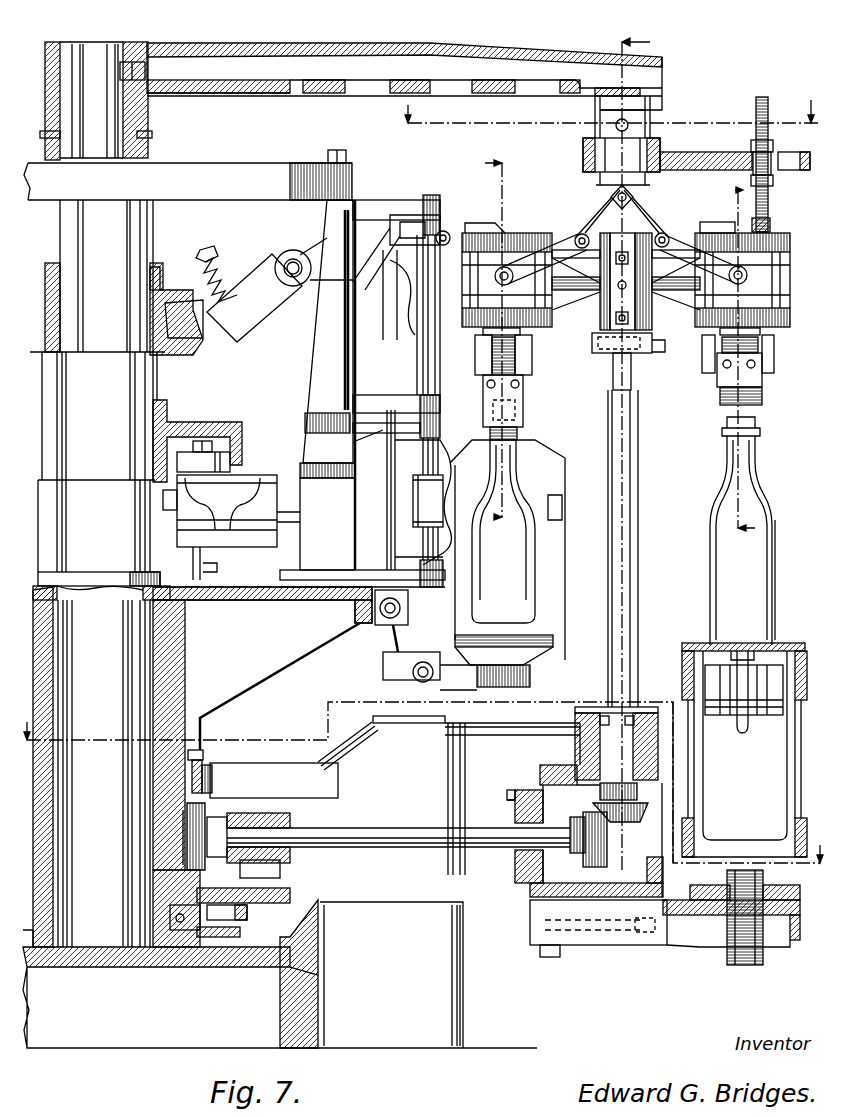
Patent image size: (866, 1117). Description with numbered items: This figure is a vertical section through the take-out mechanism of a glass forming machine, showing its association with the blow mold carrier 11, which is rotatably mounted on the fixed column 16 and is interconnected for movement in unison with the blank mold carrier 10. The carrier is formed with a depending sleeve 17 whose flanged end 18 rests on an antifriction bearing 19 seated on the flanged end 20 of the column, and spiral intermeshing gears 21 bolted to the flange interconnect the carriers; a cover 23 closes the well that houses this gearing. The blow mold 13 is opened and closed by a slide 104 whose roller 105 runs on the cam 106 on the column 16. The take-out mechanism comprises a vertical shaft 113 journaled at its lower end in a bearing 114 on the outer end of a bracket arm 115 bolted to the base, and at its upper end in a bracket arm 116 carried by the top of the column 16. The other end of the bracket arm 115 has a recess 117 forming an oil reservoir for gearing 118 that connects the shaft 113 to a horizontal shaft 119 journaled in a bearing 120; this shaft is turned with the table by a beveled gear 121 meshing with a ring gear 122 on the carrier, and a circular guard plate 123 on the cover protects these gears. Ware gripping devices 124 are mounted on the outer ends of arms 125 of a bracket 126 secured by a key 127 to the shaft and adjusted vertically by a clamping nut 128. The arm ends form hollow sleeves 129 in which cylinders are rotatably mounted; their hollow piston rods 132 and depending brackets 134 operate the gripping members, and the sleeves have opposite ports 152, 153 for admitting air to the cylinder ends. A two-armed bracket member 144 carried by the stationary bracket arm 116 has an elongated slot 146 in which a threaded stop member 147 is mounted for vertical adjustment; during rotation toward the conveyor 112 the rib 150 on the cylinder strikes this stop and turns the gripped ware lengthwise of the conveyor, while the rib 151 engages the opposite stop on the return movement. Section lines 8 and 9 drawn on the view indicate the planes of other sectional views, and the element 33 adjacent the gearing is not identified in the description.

The section line 8- 8 is at (421, 782).
The section line 9- 9 is at (603, 107).
The vertical spindle shaft 10 is at (622, 460).
The section line 11-11 / frame beam 11 is at (258, 625).
The bottle holder 13 is at (550, 575).
The main column 16 is at (130, 405).
The base frame wall 17 is at (185, 680).
The bearing plate 18 is at (197, 895).
The ball bearing 19 is at (178, 922).
The bearing ring 20 is at (240, 932).
The bearing retainer 21 is at (247, 911).
The base plate 23 is at (320, 900).
The gear housing 33 is at (330, 795).
The feed housing 104 is at (231, 527).
The valve block 105 is at (235, 459).
The support bracket 106 is at (238, 424).
The cylinder 112 is at (790, 645).
The spindle rod 113 is at (630, 560).
The bearing 114 is at (642, 712).
The frame plate 115 is at (510, 747).
The upper arm 116 is at (445, 37).
The bearing housing 117 is at (545, 775).
The bevel gear 118 is at (610, 835).
The drive shaft 119 is at (405, 828).
The collar 120 is at (275, 822).
The bevel pinion 121 is at (215, 812).
The bearing stud 122 is at (215, 775).
The bearing block 123 is at (282, 870).
The gripper block 124 is at (518, 396).
The cross head 125 is at (592, 238).
The guide block 126 is at (655, 352).
The spindle extension 127 is at (613, 375).
The slide box 128 is at (598, 353).
The right head block 129 is at (780, 290).
The gripper jaw 132 is at (490, 351).
The gripper cap 134 is at (533, 344).
The support arm 144 is at (700, 158).
The end block 146 is at (790, 158).
The adjusting screw 147 is at (762, 100).
The head cap 150 is at (485, 228).
The head plate 151 is at (713, 228).
The link pin 152 is at (750, 268).
The toggle link 153 is at (518, 265).